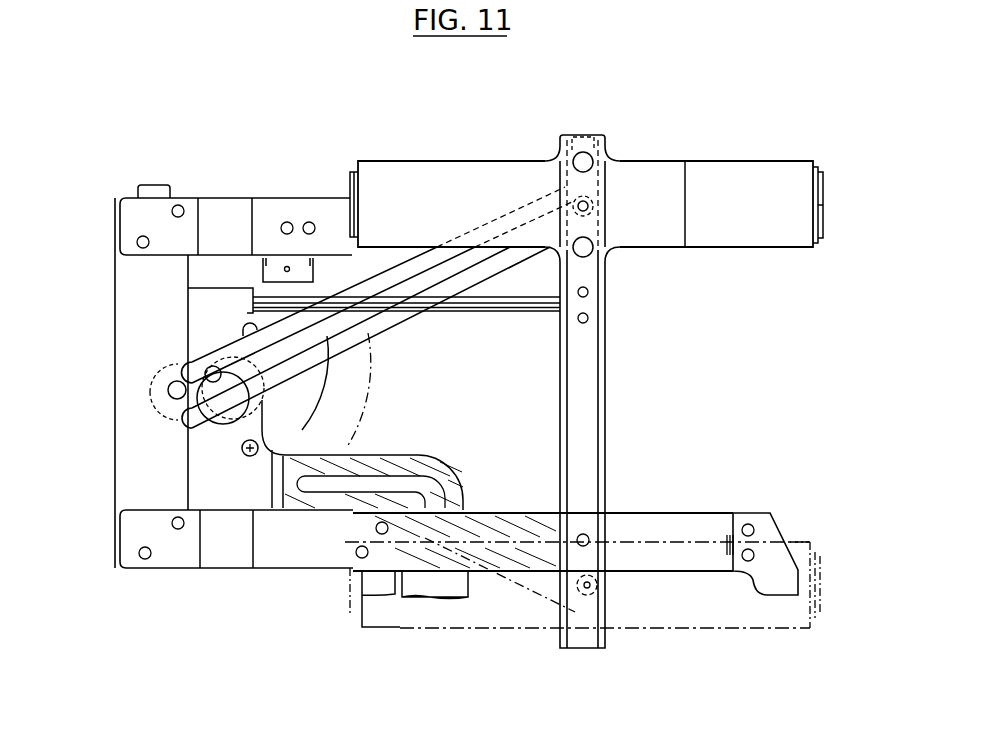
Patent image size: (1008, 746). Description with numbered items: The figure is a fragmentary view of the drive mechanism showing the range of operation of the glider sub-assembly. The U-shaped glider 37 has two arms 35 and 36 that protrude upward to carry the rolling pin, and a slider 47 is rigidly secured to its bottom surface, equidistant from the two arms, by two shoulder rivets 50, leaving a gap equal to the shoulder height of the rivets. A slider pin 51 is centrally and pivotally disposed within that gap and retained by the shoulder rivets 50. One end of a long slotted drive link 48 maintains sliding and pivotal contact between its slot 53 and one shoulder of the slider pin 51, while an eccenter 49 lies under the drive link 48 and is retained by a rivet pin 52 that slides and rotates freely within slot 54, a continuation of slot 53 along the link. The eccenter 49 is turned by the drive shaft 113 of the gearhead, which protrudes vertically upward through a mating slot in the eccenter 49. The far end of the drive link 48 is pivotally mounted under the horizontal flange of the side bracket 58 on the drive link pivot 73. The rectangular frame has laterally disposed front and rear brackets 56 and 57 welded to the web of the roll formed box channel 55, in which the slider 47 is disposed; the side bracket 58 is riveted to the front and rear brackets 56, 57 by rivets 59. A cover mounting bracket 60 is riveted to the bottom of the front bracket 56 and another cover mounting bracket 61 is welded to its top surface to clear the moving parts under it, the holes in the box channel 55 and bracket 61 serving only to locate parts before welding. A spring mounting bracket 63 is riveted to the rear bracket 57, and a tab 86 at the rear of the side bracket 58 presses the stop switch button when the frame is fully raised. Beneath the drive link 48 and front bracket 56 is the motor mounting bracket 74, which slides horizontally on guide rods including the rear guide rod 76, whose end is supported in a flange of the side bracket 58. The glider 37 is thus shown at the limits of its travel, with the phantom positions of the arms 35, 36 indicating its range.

The glider arm 35 is at (356, 180).
The glider arm 36 is at (822, 176).
The glider 37 is at (682, 160).
The slider 47 is at (590, 136).
The drive link 48 is at (366, 347).
The eccenter 49 is at (232, 418).
The shoulder rivets 50 is at (573, 160).
The slider pin 51 is at (589, 206).
The rivet pin 52 is at (203, 362).
The slot 53 is at (572, 214).
The slot 54 is at (329, 338).
The box channel 55 is at (607, 406).
The front bracket 56 is at (273, 562).
The rear bracket 57 is at (272, 212).
The side bracket 58 is at (118, 298).
The rivets 59 is at (137, 242).
The cover mounting bracket 60 is at (380, 590).
The cover mounting bracket 61 is at (766, 520).
The spring mounting bracket 63 is at (315, 271).
The drive link pivot 73 is at (174, 380).
The motor mounting bracket 74 is at (198, 294).
The rear guide rod 76 is at (526, 308).
The tab 86 is at (160, 186).
The drive shaft 113 is at (318, 404).